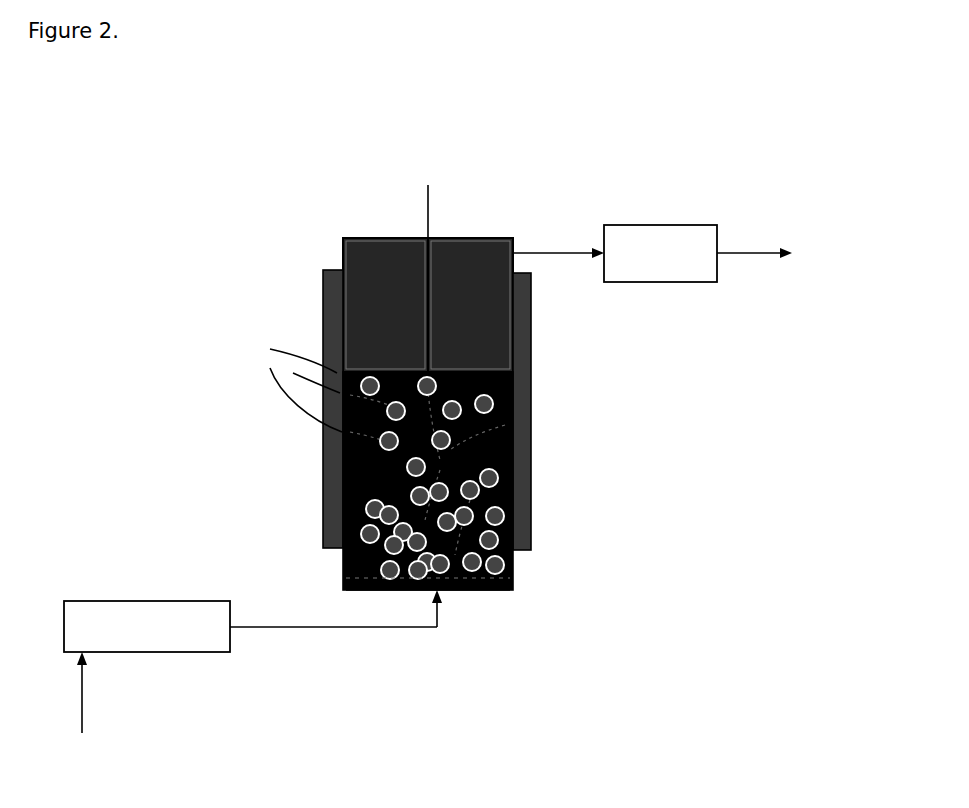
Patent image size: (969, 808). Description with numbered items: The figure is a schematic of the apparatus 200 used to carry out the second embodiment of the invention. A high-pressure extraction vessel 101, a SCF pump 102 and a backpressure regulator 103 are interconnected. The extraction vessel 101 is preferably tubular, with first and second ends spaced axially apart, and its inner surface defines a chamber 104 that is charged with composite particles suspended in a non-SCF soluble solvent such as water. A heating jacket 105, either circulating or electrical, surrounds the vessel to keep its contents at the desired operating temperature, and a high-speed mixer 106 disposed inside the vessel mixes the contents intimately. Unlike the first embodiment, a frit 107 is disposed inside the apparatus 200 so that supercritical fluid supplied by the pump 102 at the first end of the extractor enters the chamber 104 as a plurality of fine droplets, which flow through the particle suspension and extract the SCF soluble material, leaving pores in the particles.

The apparatus 200 is at (163, 149).
The high-pressure extraction vessel 101 is at (473, 590).
The SCF pump 102 is at (251, 679).
The backpressure regulator 103 is at (716, 277).
The chamber 104 is at (512, 570).
The heating jacket 105 is at (532, 367).
The high-speed mixer 106 is at (505, 425).
The frit 107 is at (353, 578).